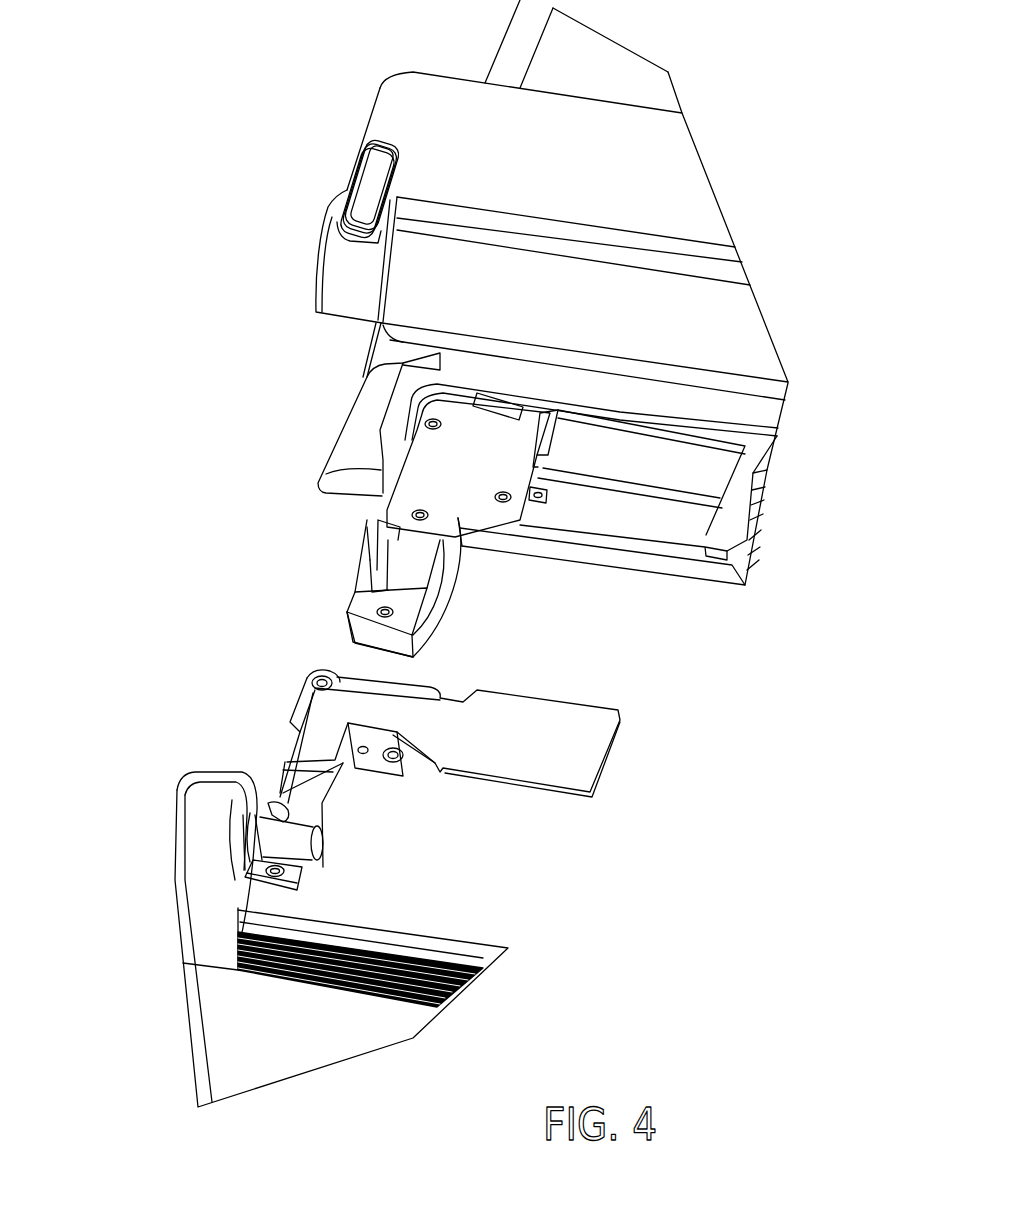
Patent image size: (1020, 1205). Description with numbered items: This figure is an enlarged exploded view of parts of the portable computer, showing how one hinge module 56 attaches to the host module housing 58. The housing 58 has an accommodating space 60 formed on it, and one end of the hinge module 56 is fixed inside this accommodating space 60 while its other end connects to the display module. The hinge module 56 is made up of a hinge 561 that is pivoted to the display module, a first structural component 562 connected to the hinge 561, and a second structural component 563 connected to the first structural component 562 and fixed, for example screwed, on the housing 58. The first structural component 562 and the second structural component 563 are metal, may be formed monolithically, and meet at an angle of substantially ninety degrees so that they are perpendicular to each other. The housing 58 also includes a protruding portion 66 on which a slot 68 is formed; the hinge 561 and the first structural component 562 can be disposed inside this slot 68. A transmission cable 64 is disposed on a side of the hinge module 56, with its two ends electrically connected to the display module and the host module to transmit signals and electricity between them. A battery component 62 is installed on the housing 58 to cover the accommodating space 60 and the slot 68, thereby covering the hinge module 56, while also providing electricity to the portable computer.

The hinge module 56 is at (180, 764).
The hinge 561 is at (293, 842).
The first structural component 562 is at (288, 805).
The second structural component 563 is at (297, 707).
The housing 58 is at (353, 417).
The accommodating space 60 is at (447, 452).
The battery component 62 is at (343, 147).
The transmission cable 64 is at (373, 710).
The protruding portion 66 is at (433, 623).
The slot 68 is at (403, 570).